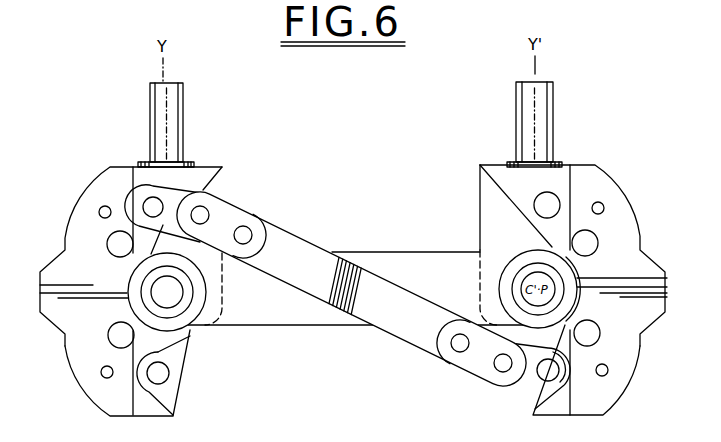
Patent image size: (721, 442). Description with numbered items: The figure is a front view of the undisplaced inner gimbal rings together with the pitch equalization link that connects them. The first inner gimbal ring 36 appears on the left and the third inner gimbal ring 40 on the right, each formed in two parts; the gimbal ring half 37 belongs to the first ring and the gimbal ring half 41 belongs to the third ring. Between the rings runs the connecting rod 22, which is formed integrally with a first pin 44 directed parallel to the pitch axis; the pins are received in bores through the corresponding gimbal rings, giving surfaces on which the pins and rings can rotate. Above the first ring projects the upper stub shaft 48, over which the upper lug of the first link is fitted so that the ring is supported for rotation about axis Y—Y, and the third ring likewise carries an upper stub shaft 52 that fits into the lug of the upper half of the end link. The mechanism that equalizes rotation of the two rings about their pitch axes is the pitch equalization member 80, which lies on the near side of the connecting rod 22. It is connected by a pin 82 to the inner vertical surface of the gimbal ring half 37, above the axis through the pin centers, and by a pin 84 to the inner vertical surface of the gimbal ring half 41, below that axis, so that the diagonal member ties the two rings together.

The connecting rod 22 is at (374, 252).
The first inner gimbal ring 36 is at (87, 413).
The gimbal ring half 37 is at (72, 358).
The third inner gimbal ring 40 is at (623, 197).
The gimbal ring half 41 is at (630, 368).
The first pin 44 is at (177, 303).
The upper stub shaft 48 is at (155, 105).
The upper stub shaft 52 is at (545, 125).
The pitch equalization member 80 is at (410, 343).
The pin 82 is at (150, 205).
The pin 84 is at (544, 376).